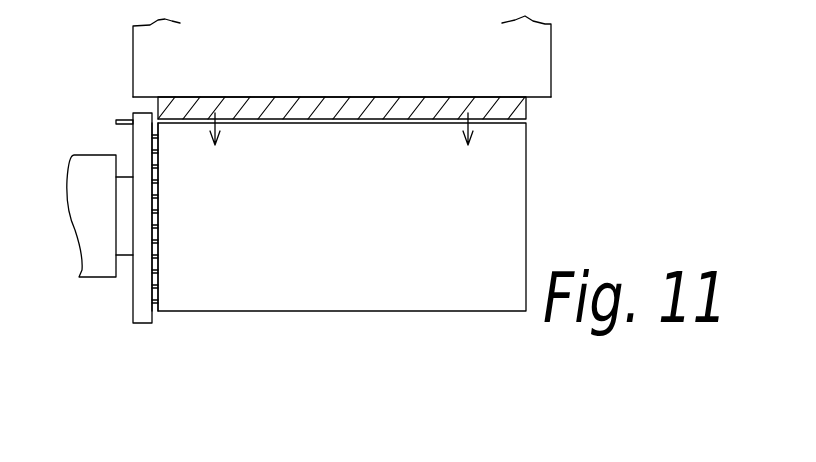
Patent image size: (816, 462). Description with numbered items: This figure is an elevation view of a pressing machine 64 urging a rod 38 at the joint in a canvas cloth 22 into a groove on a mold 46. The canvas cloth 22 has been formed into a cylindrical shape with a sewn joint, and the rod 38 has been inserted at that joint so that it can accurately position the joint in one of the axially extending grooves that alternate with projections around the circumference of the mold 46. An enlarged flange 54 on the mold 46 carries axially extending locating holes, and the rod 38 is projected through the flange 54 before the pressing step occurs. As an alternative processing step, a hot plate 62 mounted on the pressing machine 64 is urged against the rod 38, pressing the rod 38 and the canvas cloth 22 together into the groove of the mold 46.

The canvas cloth 22 is at (505, 220).
The rod 38 is at (122, 118).
The mold 46 is at (140, 263).
The enlarged flange 54 is at (142, 312).
The hot plate 62 is at (528, 107).
The pressing machine 64 is at (565, 53).